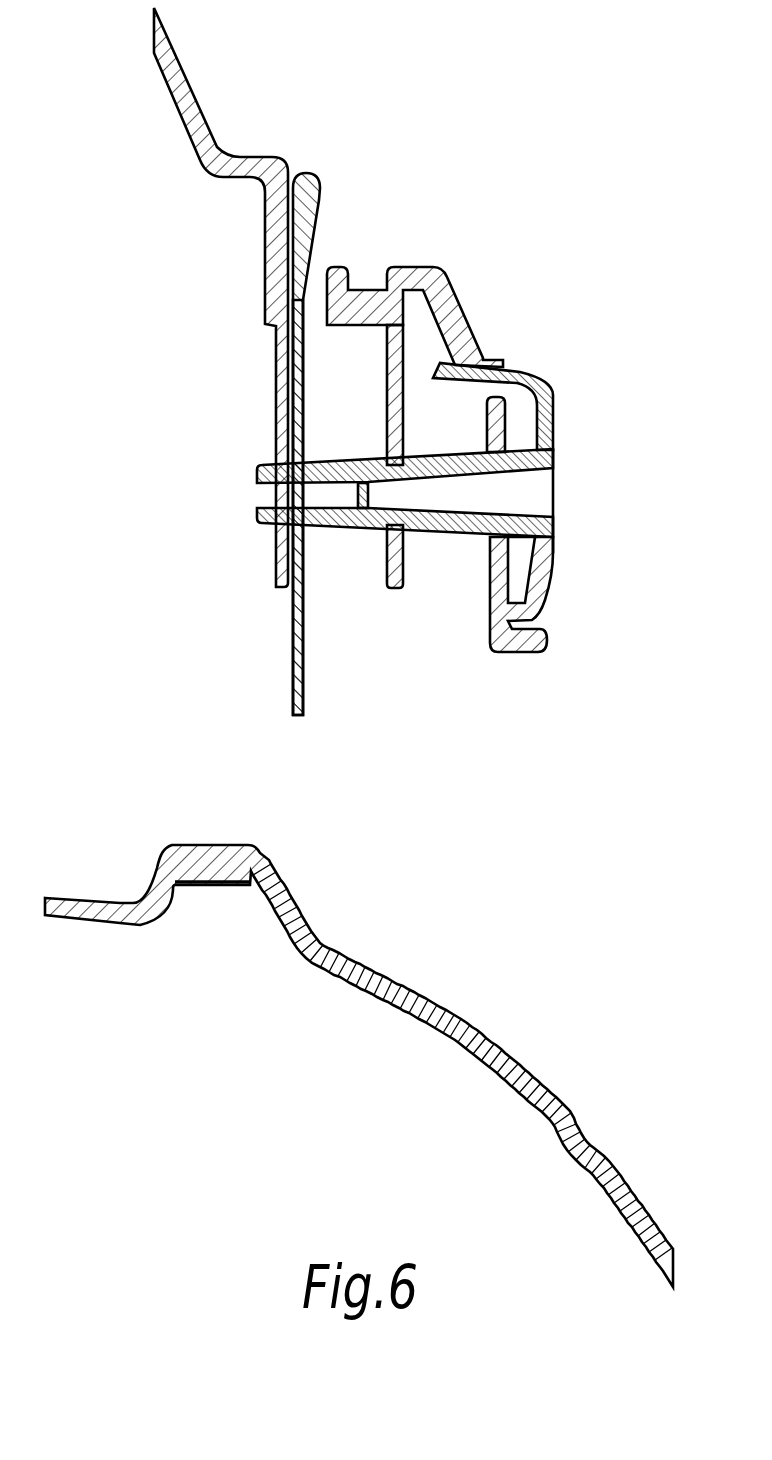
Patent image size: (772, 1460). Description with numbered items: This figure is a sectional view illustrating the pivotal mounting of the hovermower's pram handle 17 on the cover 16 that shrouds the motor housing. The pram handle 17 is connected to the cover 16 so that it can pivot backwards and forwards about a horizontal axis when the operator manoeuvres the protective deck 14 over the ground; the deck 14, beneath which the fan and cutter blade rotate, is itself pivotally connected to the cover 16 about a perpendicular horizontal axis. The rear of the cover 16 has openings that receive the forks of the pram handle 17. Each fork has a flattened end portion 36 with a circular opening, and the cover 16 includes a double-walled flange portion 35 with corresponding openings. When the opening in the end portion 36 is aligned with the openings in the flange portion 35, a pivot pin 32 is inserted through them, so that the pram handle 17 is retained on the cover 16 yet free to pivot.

The protective deck 14 is at (463, 1030).
The cover 16 is at (205, 137).
The pram handle 17 is at (310, 212).
The pivot pin 32 is at (528, 497).
The double-walled flange portion 35 is at (397, 333).
The end portion 36 is at (298, 618).